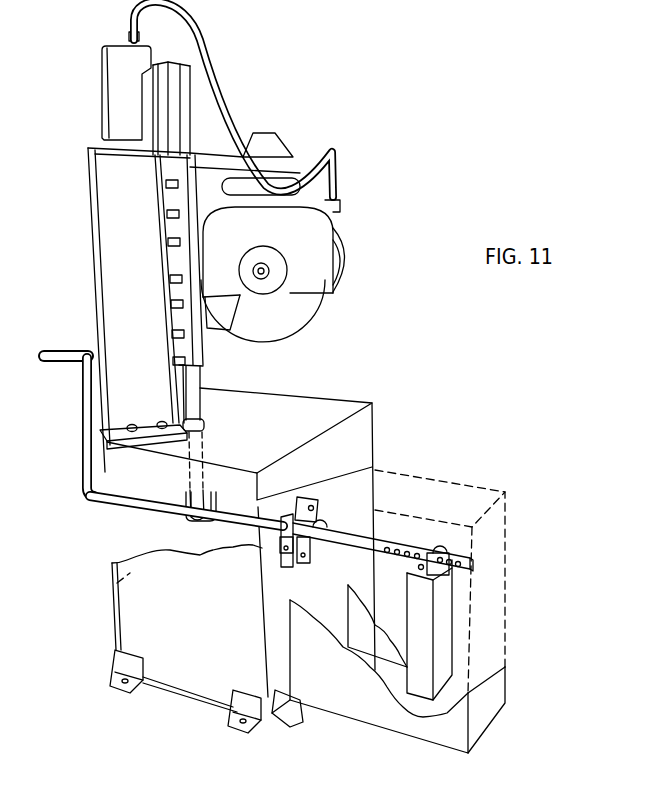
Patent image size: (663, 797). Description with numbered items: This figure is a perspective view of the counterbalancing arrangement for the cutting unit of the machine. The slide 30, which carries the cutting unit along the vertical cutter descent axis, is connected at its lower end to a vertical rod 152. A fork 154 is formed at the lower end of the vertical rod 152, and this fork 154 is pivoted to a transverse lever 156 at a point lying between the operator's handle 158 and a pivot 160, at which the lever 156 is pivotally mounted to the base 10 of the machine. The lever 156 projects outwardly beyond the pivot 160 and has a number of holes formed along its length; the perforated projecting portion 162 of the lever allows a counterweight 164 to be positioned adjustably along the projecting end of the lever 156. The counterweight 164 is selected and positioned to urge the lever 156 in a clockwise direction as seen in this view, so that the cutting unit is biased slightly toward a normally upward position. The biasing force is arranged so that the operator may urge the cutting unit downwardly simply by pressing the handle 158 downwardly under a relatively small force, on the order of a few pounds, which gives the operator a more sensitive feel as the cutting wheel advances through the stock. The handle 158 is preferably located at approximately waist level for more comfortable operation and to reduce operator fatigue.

The base 10 is at (137, 608).
The slide 30 is at (182, 115).
The vertical rod 152 is at (203, 386).
The fork 154 is at (187, 495).
The transverse lever 156 is at (218, 524).
The operator's handle 158 is at (65, 352).
The pivot 160 is at (324, 548).
The perforated bar 162 is at (398, 537).
The counterweight 164 is at (445, 633).